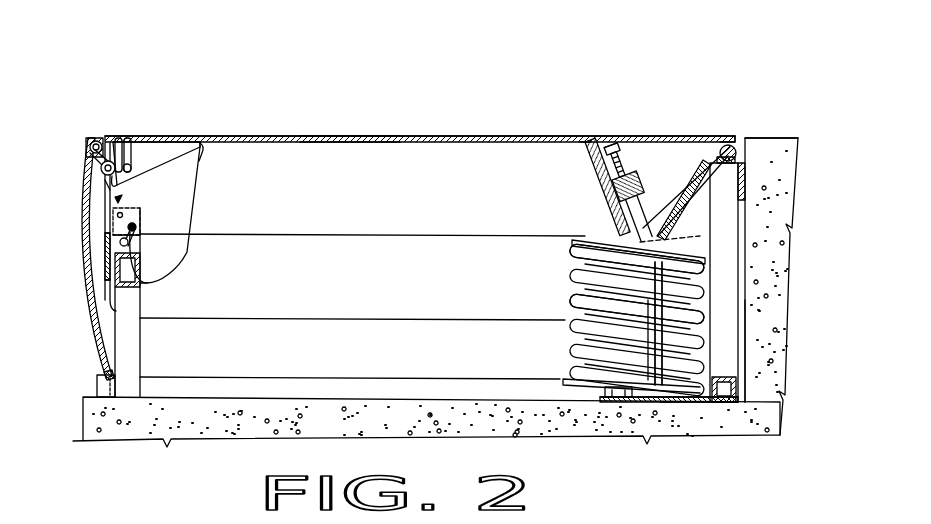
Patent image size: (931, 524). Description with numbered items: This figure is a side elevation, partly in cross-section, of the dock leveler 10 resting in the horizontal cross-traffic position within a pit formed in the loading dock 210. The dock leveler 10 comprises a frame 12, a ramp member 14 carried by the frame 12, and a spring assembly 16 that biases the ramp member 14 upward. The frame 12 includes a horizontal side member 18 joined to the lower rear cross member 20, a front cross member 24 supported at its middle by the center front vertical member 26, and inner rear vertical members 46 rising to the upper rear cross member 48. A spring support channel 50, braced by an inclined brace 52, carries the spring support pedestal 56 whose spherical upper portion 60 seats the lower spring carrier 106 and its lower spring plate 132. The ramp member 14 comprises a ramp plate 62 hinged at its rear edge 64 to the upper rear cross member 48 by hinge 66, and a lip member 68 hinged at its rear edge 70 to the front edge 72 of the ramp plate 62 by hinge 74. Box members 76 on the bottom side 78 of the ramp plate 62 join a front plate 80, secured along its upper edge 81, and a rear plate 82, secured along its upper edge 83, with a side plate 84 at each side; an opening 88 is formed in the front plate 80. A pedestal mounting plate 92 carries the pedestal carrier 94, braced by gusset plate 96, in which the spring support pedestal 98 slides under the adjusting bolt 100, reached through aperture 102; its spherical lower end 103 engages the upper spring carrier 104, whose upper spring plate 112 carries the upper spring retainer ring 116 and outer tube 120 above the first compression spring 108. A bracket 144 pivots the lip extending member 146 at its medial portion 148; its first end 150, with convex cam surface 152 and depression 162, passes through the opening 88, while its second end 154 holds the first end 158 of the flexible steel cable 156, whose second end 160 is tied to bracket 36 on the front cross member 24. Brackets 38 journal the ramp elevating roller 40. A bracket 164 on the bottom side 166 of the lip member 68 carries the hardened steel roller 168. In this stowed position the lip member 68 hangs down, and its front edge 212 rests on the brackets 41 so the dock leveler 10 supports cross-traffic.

The dock leveler 10 is at (134, 40).
The frame 12 is at (742, 322).
The ramp member 14 is at (420, 136).
The spring assembly 16 is at (575, 277).
The horizontal side member 18 is at (510, 405).
The lower rear cross member 20 is at (722, 377).
The front cross member 24 is at (140, 268).
The center front vertical member 26 is at (130, 356).
The steel bracket 36 is at (148, 284).
The steel brackets 38 is at (141, 227).
The ramp elevating roller 40 is at (141, 216).
The steel bracket 41 is at (100, 380).
The inner rear vertical member 46 is at (710, 368).
The upper rear cross member 48 is at (755, 168).
The spring support channel 50 is at (634, 402).
The inclined brace 52 is at (699, 250).
The spring support pedestal 56 is at (575, 402).
The upper portion of spring support pedestal 60 is at (604, 389).
The ramp plate 62 is at (358, 136).
The rear edge of ramp plate 64 is at (733, 146).
The hinge 66 is at (740, 158).
The lip member 68 is at (82, 203).
The rear edge of lip member 70 is at (93, 136).
The front edge of ramp plate 72 is at (108, 160).
The hinge 74 is at (95, 140).
The box members 76 is at (378, 237).
The bottom side of ramp plate 78 is at (378, 142).
The front plate 80 is at (107, 268).
The upper edge of front plate 81 is at (127, 163).
The rear plate 82 is at (731, 140).
The upper edge of rear plate 83 is at (724, 282).
The side plate 84 is at (348, 320).
The opening 88 is at (105, 224).
The pedestal mounting plate 92 is at (589, 164).
The pedestal carrier 94 is at (614, 158).
The gusset plate 96 is at (681, 155).
The spring support pedestal 98 is at (606, 190).
The adjusting bolt 100 is at (600, 150).
The aperture 102 is at (585, 140).
The lower end of spring pedestal 103 is at (700, 233).
The upper spring carrier 104 is at (574, 242).
The lower spring carrier 106 is at (563, 384).
The first compression spring 108 is at (571, 253).
The upper spring plate 112 is at (616, 242).
The upper spring retainer ring 116 is at (693, 283).
The outer tube 120 is at (571, 303).
The lower spring plate 132 is at (681, 402).
The steel bracket 144 is at (122, 150).
The lip extending member 146 is at (160, 162).
The medial portion of lip extending member 148 is at (130, 158).
The first end of lip extending member 150 is at (120, 188).
The convex cam surface 152 is at (106, 185).
The second end of lip extending member 154 is at (197, 139).
The flexible steel cable 156 is at (192, 215).
The first end of cable 158 is at (203, 160).
The second end of cable 160 is at (136, 232).
The depression 162 is at (124, 199).
The steel bracket 164 is at (96, 162).
The bottom side of lip member 166 is at (94, 240).
The hardened steel roller 168 is at (90, 150).
The loading dock 210 is at (744, 170).
The front edge of lip member 212 is at (118, 377).